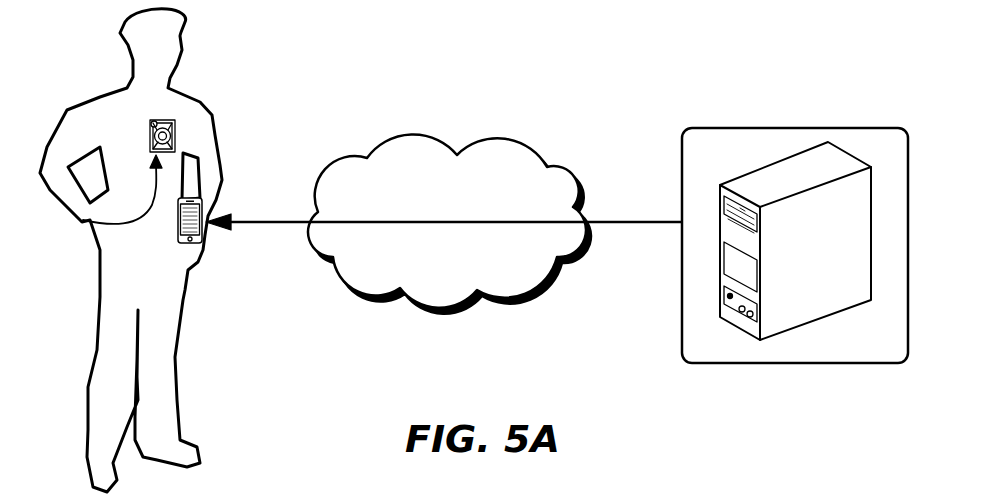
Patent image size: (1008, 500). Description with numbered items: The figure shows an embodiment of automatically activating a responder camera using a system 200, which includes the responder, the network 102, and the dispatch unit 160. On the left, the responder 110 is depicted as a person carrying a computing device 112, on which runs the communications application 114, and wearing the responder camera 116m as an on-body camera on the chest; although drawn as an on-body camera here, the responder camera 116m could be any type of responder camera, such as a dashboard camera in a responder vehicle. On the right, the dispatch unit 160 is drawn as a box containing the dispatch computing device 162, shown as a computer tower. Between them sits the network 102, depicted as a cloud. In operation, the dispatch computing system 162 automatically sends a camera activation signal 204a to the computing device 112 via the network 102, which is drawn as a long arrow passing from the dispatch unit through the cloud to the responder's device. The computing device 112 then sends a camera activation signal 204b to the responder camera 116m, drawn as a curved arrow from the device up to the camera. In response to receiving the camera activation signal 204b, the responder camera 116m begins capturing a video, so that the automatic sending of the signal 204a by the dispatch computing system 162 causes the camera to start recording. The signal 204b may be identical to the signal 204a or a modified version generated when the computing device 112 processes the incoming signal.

The system 200 is at (548, 83).
The responder 110 is at (112, 92).
The responder camera 116m is at (217, 100).
The computing device 112 is at (205, 228).
The communications application 114 is at (193, 244).
The camera activation signal 204b is at (83, 220).
The network 102 is at (390, 135).
The camera activation signal 204a is at (618, 221).
The dispatch unit 160 is at (732, 128).
The dispatch computing device 162 is at (840, 152).